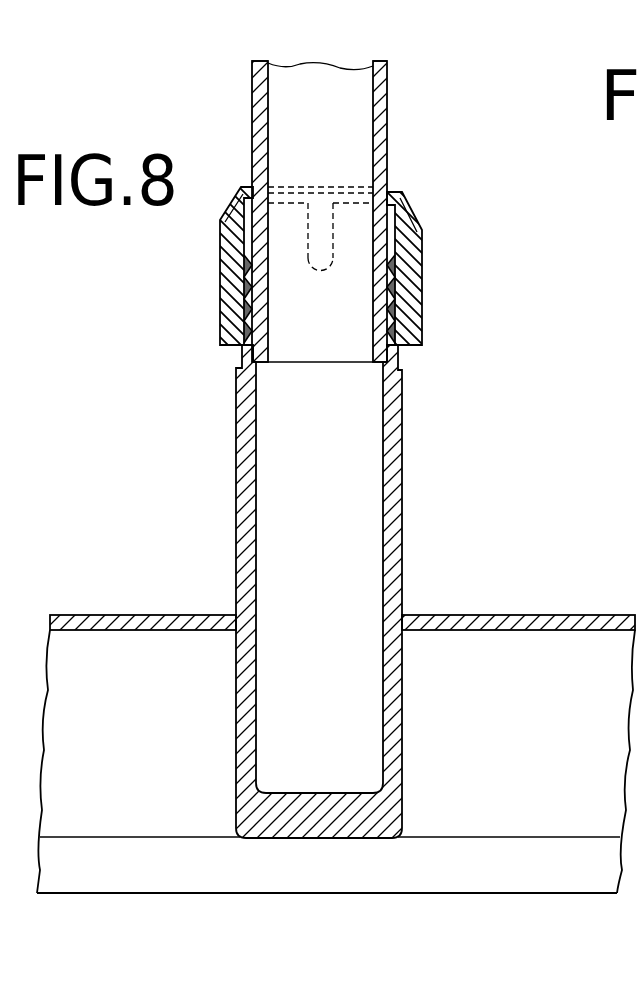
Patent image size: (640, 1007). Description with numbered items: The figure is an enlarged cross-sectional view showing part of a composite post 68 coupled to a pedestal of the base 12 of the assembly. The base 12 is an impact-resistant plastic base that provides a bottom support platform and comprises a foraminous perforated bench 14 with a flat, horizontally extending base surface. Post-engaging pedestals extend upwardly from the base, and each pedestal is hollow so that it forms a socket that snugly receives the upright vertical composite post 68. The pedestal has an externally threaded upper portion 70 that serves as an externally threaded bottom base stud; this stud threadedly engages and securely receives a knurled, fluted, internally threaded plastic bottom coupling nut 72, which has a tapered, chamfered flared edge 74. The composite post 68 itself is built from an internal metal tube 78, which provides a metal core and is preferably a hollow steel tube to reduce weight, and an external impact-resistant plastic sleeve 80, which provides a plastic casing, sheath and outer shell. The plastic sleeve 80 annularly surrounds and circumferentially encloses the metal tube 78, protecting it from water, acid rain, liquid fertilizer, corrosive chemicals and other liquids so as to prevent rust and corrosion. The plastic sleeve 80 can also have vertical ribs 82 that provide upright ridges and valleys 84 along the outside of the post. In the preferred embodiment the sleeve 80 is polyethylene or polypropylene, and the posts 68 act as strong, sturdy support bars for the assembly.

The base 12 is at (472, 614).
The bench 14 is at (107, 613).
The composite post 68 is at (384, 119).
The externally threaded upper portion 70 is at (423, 290).
The bottom coupling nut 72 is at (221, 290).
The flared edge 74 is at (417, 203).
The internal metal tube 78 is at (268, 343).
The plastic sleeve 80 is at (253, 108).
The vertical ribs 82 is at (388, 93).
The ridges and valleys 84 is at (252, 73).